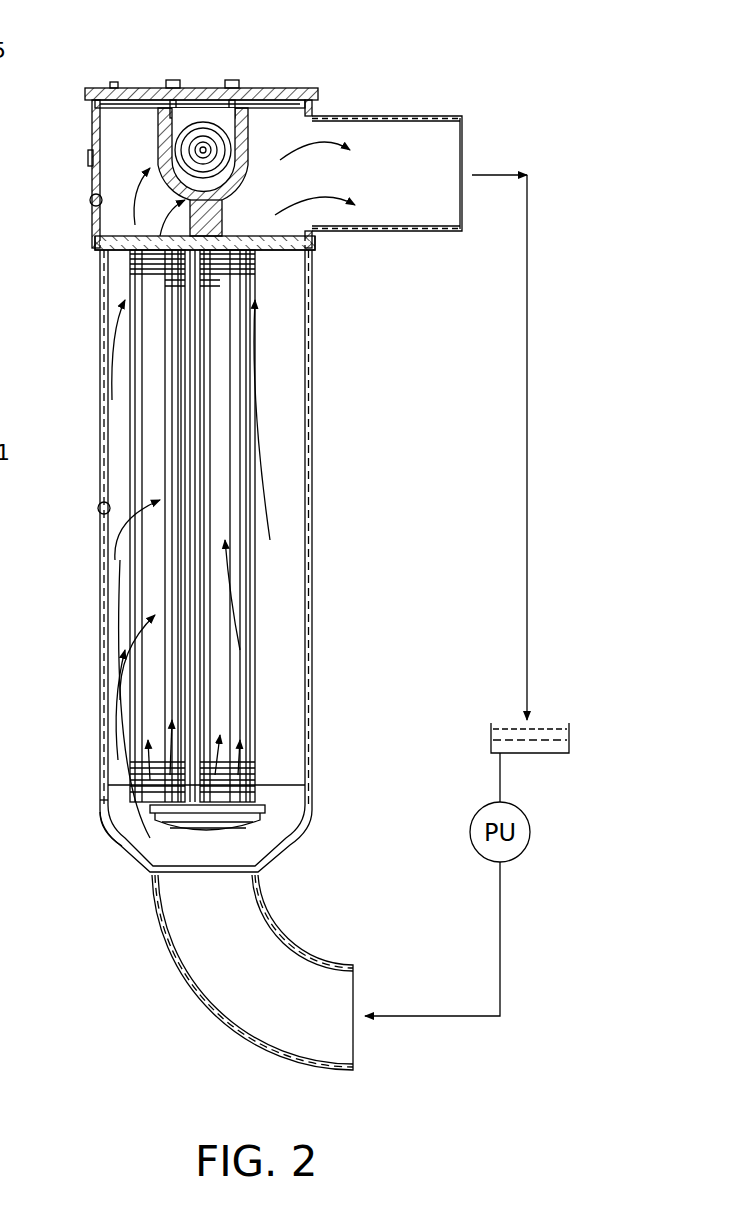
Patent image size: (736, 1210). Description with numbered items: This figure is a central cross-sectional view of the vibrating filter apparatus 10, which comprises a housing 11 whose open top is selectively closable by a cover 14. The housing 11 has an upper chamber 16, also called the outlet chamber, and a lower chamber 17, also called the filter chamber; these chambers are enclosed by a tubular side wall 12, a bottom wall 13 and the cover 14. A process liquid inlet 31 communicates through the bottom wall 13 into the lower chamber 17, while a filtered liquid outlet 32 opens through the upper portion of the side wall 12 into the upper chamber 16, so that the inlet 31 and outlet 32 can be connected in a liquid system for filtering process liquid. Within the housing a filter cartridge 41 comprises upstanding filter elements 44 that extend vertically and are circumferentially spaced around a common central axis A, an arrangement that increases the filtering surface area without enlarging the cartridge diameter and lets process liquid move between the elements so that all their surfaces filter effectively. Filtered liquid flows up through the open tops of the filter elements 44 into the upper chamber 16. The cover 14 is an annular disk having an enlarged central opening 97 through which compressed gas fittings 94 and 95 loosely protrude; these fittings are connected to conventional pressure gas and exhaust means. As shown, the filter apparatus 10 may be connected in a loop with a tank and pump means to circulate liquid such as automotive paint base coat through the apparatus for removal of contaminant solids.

The vibrating filter apparatus 10 is at (88, 878).
The housing 11 is at (98, 804).
The side wall 12 is at (100, 648).
The bottom wall 13 is at (103, 835).
The cover 14 is at (92, 90).
The upper chamber 16 is at (98, 204).
The lower chamber 17 is at (100, 508).
The process liquid inlet 31 is at (210, 1012).
The filtered liquid outlet 32 is at (425, 115).
The filter cartridge 41 is at (128, 288).
The filter element 44 is at (128, 318).
The compressed gas fitting 94 is at (176, 84).
The compressed gas fitting 95 is at (236, 84).
The central opening 97 is at (155, 92).
The central axis A is at (193, 503).